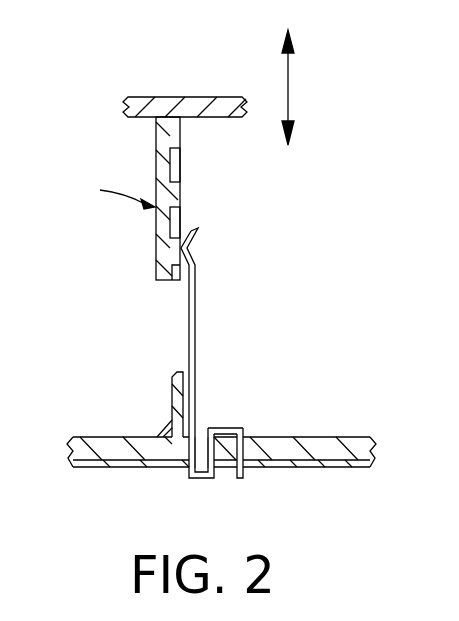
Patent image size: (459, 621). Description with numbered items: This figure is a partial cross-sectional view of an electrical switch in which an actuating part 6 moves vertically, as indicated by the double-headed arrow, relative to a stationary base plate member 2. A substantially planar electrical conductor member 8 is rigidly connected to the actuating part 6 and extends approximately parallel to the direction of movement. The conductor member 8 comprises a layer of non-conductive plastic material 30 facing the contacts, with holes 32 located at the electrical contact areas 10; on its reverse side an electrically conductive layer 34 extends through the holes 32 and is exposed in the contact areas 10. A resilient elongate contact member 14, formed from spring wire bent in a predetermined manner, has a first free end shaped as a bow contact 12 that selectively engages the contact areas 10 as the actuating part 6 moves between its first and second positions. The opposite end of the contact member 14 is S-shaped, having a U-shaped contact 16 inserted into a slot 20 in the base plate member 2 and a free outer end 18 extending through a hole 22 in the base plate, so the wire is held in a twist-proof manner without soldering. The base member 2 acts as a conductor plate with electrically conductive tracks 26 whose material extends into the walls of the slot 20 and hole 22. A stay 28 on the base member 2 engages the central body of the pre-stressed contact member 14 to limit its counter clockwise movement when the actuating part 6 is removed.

The base plate member 2 is at (338, 448).
The actuating part 6 is at (190, 107).
The electrical conductor member 8 is at (118, 194).
The electrical contact areas 10 is at (175, 188).
The bow contact 12 is at (188, 258).
The resilient elongate contact member 14 is at (193, 332).
The U-shaped contact 16 is at (197, 472).
The free outer end 18 is at (240, 478).
The slot 20 is at (198, 448).
The hole 22 is at (245, 433).
The electrically conductive tracks 26 is at (338, 467).
The stay 28 is at (175, 420).
The layer of non-conductive plastic material 30 is at (177, 230).
The holes 32 is at (175, 153).
The electrically conductive layer 34 is at (163, 267).